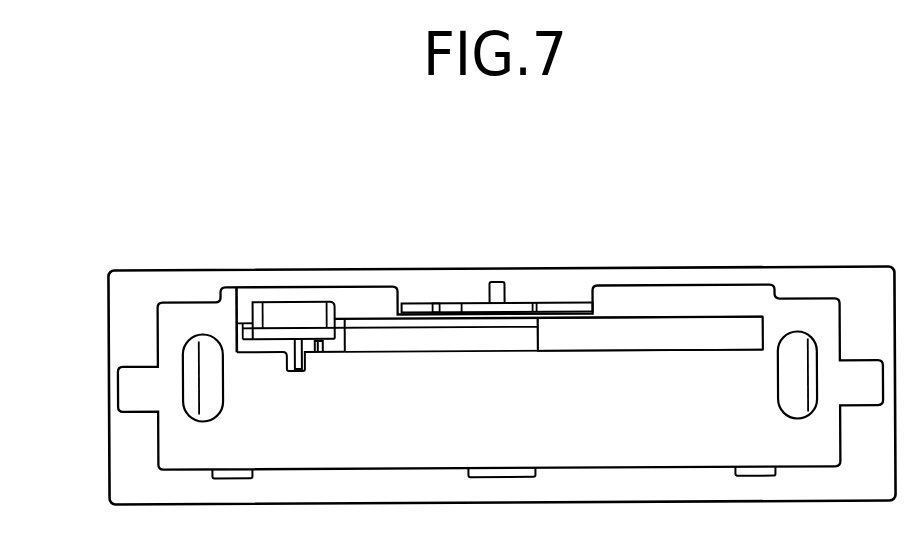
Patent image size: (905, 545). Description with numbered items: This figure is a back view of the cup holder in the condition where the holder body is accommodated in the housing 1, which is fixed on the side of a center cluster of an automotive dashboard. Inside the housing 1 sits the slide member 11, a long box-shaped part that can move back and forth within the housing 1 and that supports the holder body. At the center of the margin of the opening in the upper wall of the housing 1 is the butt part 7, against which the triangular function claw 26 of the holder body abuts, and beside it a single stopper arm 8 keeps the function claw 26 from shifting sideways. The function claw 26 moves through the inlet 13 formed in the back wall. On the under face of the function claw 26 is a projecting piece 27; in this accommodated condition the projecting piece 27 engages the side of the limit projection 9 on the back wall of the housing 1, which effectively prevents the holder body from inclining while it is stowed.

The housing 1 is at (96, 473).
The butt part 7 is at (522, 310).
The stopper arm 8 is at (425, 304).
The limit projection 9 is at (320, 356).
The slide member 11 is at (672, 328).
The inlet 13 is at (375, 330).
The function claw 26 is at (294, 310).
The projecting piece 27 is at (297, 373).